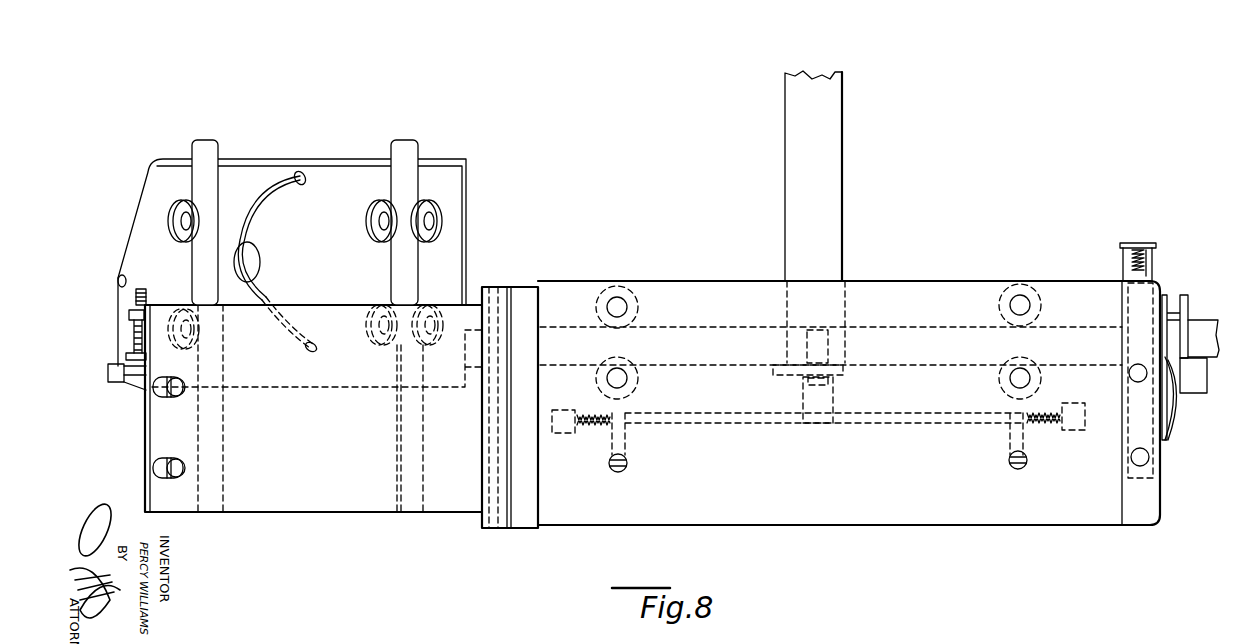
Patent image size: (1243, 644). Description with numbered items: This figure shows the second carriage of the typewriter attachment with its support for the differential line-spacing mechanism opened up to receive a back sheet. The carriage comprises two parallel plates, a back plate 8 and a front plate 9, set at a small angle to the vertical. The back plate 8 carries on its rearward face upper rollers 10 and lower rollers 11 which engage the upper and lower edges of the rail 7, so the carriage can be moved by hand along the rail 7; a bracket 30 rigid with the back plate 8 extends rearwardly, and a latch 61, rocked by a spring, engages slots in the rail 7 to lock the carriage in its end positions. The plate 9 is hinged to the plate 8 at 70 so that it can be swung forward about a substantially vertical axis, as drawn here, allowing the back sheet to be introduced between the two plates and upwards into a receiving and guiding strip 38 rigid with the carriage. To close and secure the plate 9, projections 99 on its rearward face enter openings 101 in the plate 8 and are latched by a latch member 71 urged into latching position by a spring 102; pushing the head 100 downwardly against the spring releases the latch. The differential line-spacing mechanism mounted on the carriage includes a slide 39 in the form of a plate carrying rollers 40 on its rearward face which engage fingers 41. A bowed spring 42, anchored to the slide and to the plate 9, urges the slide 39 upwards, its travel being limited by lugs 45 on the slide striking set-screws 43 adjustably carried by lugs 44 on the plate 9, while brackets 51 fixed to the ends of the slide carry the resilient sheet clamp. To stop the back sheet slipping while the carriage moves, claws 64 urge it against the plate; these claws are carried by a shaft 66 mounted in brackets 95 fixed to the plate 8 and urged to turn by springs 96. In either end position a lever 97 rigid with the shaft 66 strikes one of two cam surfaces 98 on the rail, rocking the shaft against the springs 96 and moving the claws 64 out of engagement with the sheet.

The rail 7 is at (1212, 325).
The back plate 8 is at (690, 288).
The plate 9 is at (332, 512).
The upper rollers 10 is at (638, 304).
The lower rollers 11 is at (638, 380).
The bracket 30 is at (1176, 395).
The receiving and guiding strip 38 is at (843, 253).
The slide 39 is at (340, 176).
The rollers 40 is at (180, 202).
The fingers 41 is at (216, 155).
The bowed spring 42 is at (250, 214).
The set-screws 43 is at (143, 289).
The lugs 44 is at (129, 315).
The lugs 45 is at (108, 373).
The brackets 51 is at (140, 222).
The latch 61 is at (1202, 390).
The claws 64 is at (616, 472).
The shaft 66 is at (752, 425).
The hinge 70 is at (492, 470).
The latch member 71 is at (1153, 271).
The brackets 95 is at (570, 434).
The springs 96 is at (592, 428).
The lever 97 is at (834, 404).
The cam surfaces 98 is at (829, 346).
The projections 99 is at (182, 458).
The head 100 is at (1138, 243).
The openings 101 is at (1140, 448).
The spring 102 is at (1128, 265).